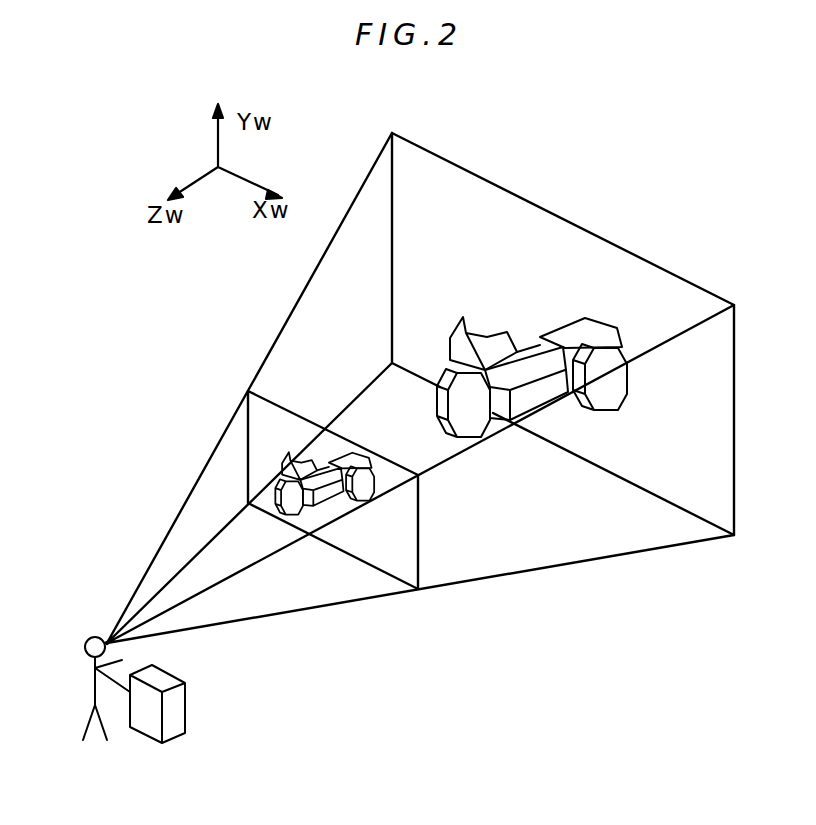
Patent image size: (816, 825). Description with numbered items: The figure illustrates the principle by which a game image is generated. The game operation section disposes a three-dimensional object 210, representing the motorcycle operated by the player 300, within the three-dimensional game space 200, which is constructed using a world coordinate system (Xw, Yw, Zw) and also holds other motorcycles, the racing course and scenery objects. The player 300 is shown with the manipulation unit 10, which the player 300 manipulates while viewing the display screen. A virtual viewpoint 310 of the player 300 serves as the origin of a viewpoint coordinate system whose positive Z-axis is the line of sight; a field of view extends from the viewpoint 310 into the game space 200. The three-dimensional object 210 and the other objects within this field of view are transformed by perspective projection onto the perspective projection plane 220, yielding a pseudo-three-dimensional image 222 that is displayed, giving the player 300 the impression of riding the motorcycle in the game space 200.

The three-dimensional game space 200 is at (343, 318).
The three-dimensional object 210 is at (478, 338).
The perspective projection plane 220 is at (247, 433).
The pseudo-three-dimensional image 222 is at (328, 494).
The player 300 is at (88, 637).
The virtual viewpoint 310 is at (115, 648).
The manipulation unit 10 is at (175, 720).